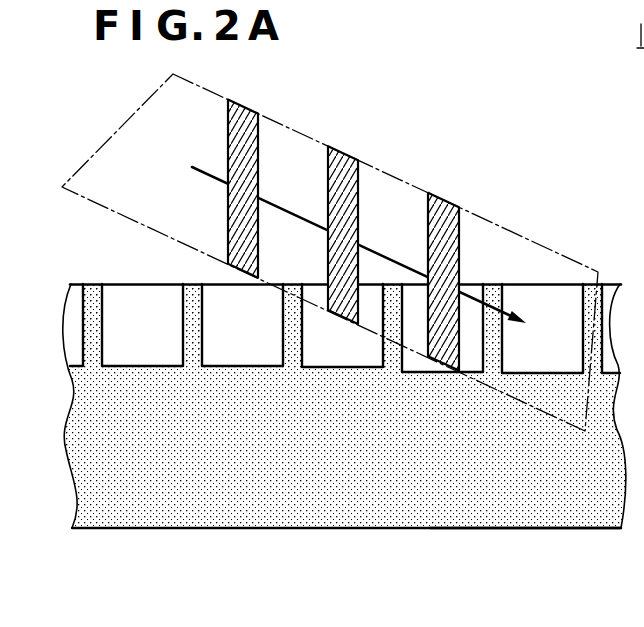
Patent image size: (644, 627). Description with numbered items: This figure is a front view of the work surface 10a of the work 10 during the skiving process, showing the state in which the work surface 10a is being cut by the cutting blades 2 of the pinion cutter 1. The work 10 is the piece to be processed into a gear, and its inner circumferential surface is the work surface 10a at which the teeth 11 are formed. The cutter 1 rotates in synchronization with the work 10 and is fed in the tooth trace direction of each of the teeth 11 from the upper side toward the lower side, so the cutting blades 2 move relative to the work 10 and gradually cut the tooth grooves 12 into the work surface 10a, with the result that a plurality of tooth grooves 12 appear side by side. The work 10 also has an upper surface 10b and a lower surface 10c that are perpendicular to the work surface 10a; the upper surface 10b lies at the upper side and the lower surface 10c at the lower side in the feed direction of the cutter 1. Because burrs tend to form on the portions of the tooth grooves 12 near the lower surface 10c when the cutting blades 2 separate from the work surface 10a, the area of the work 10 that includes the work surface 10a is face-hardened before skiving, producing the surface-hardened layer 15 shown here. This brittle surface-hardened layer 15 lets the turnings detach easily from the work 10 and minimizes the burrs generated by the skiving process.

The pinion cutter 1 is at (125, 101).
The cutting blades 2 is at (327, 172).
The work 10 is at (346, 408).
The work surface 10a is at (207, 508).
The surface-hardened layer 15 is at (346, 541).
The upper surface 10b is at (140, 284).
The lower surface 10c is at (467, 529).
The teeth 11 is at (98, 313).
The tooth grooves 12 is at (228, 300).